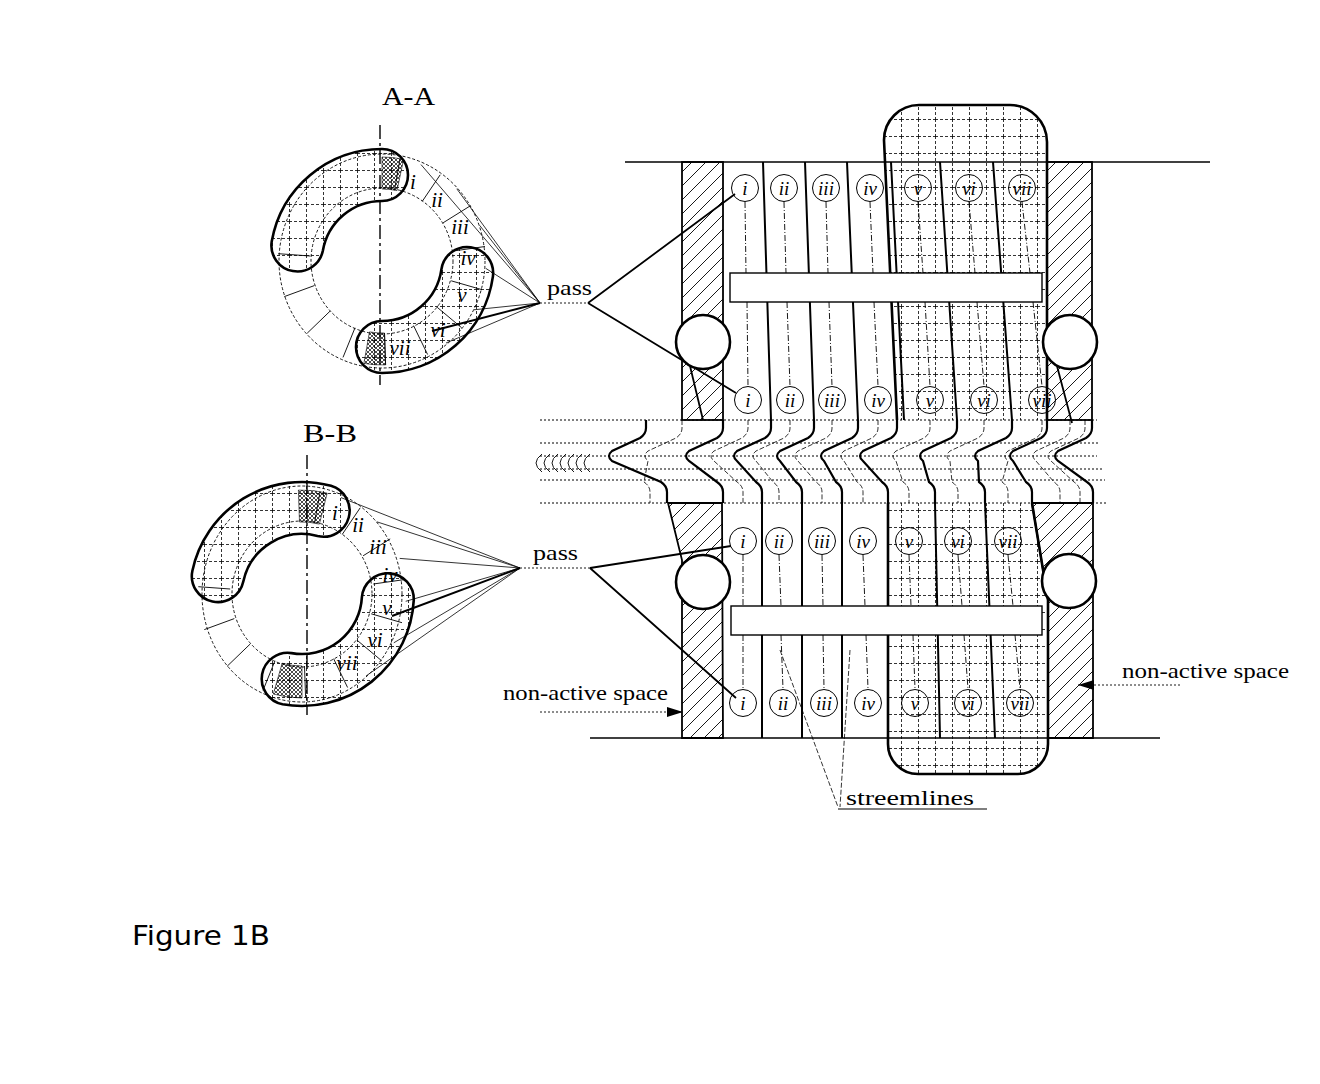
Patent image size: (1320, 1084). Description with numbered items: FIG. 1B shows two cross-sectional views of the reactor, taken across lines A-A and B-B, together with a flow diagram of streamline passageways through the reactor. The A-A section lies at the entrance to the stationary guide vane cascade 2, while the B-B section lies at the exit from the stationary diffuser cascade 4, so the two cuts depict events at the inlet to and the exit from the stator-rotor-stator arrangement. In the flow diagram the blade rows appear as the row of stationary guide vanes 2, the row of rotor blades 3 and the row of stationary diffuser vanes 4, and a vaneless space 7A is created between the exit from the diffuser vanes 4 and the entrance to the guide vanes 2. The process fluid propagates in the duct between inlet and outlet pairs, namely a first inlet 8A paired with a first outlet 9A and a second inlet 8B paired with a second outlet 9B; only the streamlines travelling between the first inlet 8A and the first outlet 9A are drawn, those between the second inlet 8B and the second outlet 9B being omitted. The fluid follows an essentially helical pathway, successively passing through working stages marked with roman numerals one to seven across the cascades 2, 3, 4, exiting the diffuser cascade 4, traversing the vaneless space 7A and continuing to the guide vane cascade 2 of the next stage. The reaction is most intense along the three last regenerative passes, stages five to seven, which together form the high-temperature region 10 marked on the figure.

The stationary guide vane cascade 2 is at (1120, 427).
The rotor blade cascade 3 is at (1130, 457).
The stationary diffuser vane cascade 4 is at (1135, 492).
The vaneless portion of the duct 7A is at (975, 287).
The first inlet 8A is at (381, 152).
The second inlet 8B is at (405, 342).
The first outlet 9A is at (355, 700).
The second outlet 9B is at (272, 503).
The high-temperature region 10 is at (540, 303).